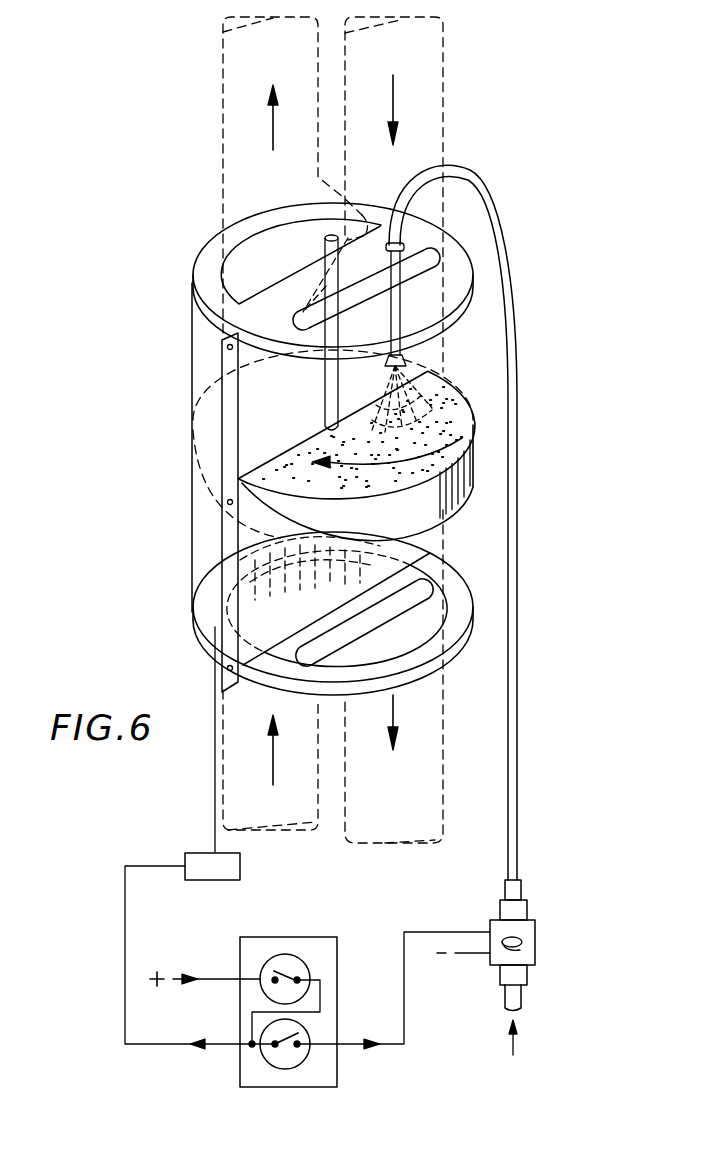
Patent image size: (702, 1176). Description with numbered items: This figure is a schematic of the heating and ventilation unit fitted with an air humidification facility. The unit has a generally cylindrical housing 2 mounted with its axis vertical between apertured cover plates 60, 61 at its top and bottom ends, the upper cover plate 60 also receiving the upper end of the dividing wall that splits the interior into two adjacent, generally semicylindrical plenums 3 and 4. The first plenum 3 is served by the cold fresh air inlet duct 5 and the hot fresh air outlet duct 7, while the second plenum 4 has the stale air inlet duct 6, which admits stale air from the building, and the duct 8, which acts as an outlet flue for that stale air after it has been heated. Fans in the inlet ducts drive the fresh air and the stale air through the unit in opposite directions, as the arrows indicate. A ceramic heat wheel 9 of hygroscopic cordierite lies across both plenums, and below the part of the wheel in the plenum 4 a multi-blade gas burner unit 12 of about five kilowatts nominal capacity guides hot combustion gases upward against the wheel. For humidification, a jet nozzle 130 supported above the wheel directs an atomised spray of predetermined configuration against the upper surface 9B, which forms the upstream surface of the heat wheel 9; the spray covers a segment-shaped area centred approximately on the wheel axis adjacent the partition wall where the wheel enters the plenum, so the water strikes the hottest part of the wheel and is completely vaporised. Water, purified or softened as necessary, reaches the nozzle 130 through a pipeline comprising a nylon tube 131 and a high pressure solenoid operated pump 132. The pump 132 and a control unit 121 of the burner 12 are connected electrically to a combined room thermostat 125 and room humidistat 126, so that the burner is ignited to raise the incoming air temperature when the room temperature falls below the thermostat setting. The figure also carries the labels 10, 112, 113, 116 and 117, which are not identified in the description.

The housing 2 is at (197, 368).
The first plenum 3 is at (262, 538).
The second plenum 4 is at (216, 525).
The cold fresh air inlet duct 5 is at (455, 112).
The stale air inlet duct 6 is at (290, 818).
The hot fresh air outlet duct 7 is at (257, 421).
The outlet flue duct 8 is at (238, 108).
The heat wheel 9 is at (463, 480).
The upper surface of heat wheel 9B is at (437, 444).
The shaft 10 is at (324, 253).
The gas burner unit 12 is at (405, 560).
The upper cover plate 60 is at (205, 262).
The lower cover plate 61 is at (452, 635).
The upper slot 112 is at (430, 290).
The lower plate slot 113 is at (428, 608).
The slot 116 is at (330, 580).
The outlet opening 117 is at (262, 291).
The control unit 121 is at (207, 865).
The room thermostat 125 is at (290, 960).
The room humidistat 126 is at (285, 1070).
The jet nozzle 130 is at (405, 358).
The nylon tube 131 is at (518, 385).
The solenoid operated pump 132 is at (535, 930).